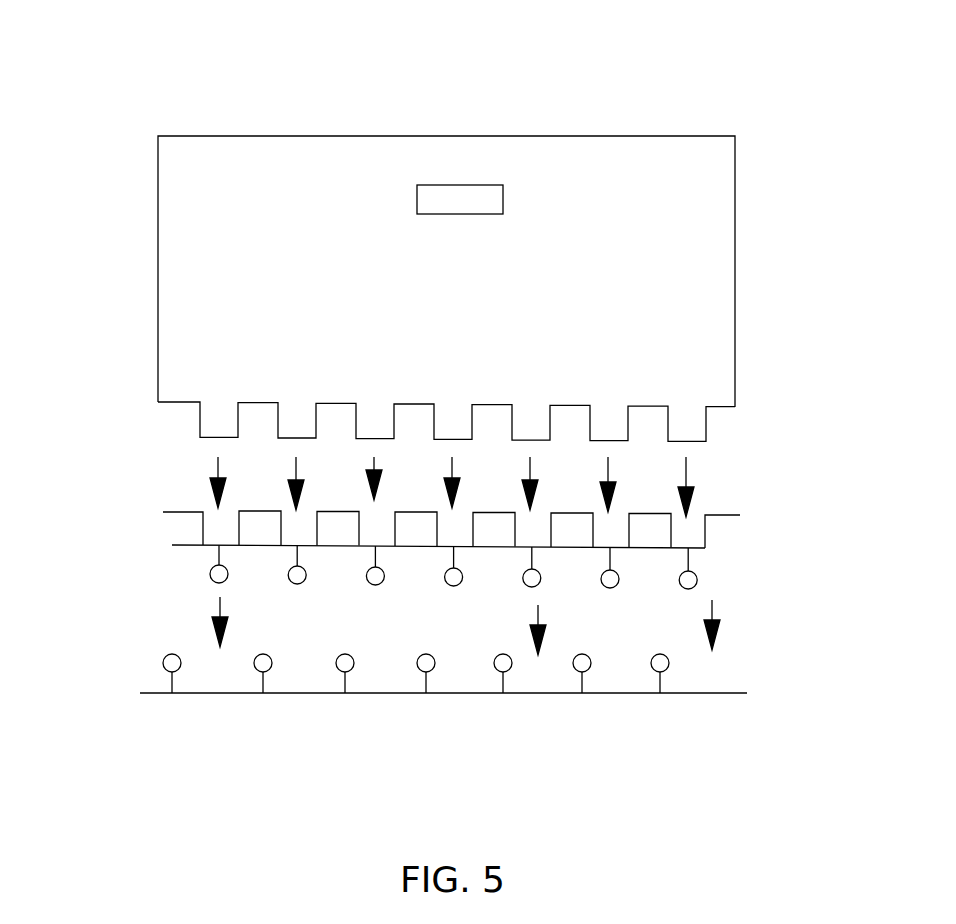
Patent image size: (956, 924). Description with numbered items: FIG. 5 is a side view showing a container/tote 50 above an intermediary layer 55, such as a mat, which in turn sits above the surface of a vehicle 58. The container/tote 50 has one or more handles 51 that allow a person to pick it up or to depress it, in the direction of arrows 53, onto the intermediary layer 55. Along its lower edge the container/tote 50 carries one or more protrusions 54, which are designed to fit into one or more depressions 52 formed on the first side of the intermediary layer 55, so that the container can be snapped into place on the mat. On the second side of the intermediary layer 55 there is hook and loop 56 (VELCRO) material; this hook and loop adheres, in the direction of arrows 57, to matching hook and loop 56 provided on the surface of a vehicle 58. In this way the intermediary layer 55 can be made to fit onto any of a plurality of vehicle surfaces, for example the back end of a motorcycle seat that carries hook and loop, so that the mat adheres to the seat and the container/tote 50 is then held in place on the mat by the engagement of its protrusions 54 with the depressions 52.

The container/tote 50 is at (347, 163).
The handle 51 is at (480, 202).
The depression 52 is at (693, 530).
The arrows 53 is at (688, 462).
The protrusion 54 is at (220, 412).
The intermediary layer 55 is at (155, 545).
The hook and loop 56 is at (265, 655).
The arrows 57 is at (713, 602).
The surface of a vehicle 58 is at (468, 693).